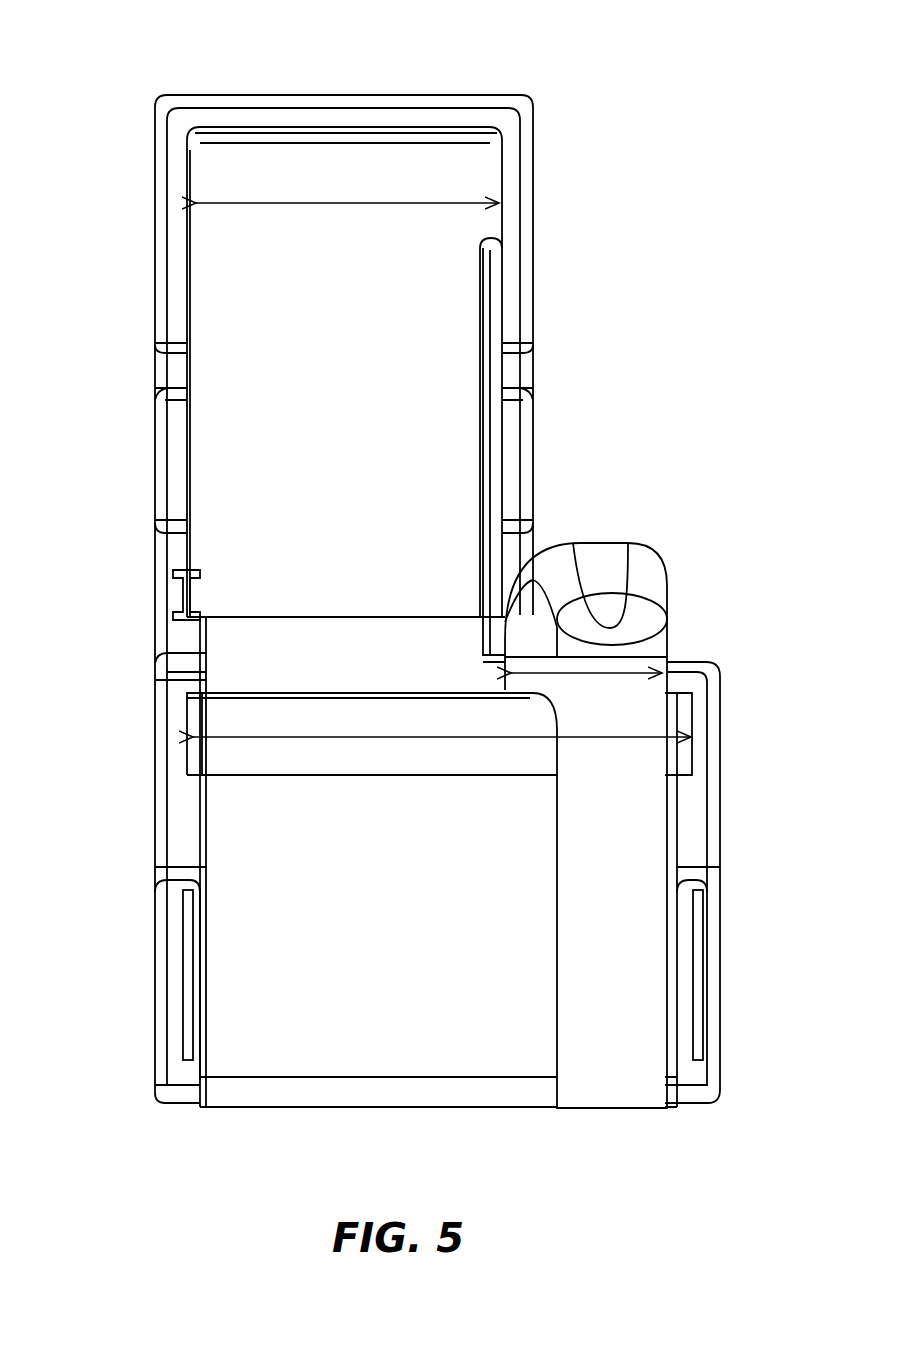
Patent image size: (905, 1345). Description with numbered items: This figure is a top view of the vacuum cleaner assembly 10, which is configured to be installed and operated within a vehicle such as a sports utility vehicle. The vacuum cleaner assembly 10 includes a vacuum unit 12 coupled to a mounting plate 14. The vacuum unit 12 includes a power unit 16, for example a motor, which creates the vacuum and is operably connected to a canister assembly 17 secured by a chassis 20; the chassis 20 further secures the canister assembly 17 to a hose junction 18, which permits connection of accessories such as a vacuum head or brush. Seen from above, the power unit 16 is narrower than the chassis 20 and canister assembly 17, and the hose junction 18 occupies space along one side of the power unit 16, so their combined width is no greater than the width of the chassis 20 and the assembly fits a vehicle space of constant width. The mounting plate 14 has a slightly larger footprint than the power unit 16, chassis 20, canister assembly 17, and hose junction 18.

The vacuum cleaner assembly 10 is at (717, 236).
The vacuum unit 12 is at (420, 468).
The mounting plate 14 is at (192, 130).
The power unit 16 is at (370, 358).
The canister assembly 17 is at (449, 1042).
The hose junction 18 is at (618, 808).
The chassis 20 is at (235, 760).